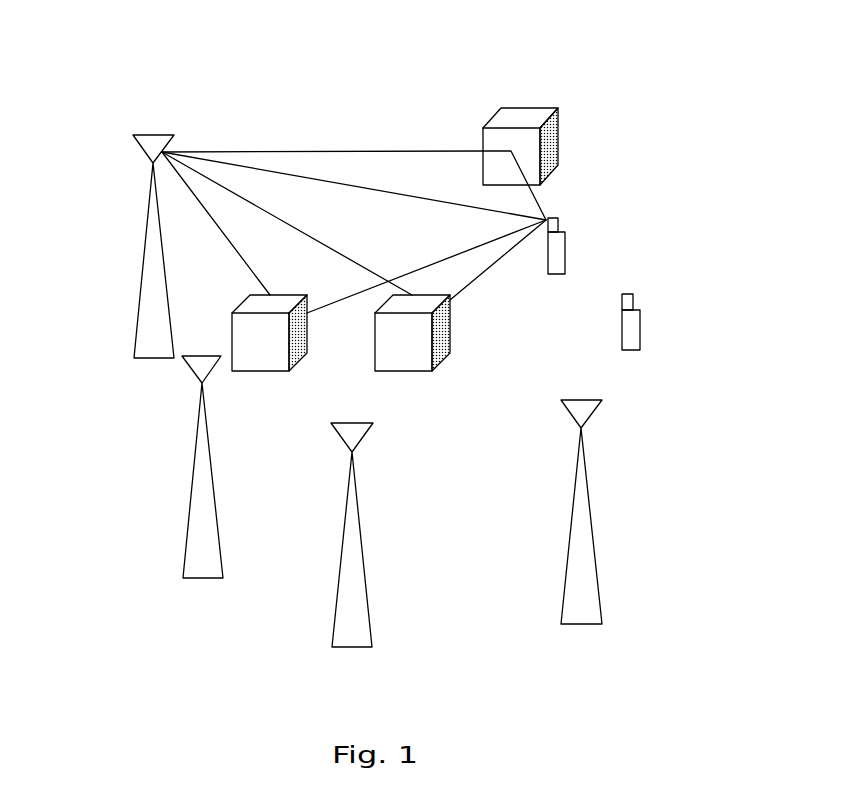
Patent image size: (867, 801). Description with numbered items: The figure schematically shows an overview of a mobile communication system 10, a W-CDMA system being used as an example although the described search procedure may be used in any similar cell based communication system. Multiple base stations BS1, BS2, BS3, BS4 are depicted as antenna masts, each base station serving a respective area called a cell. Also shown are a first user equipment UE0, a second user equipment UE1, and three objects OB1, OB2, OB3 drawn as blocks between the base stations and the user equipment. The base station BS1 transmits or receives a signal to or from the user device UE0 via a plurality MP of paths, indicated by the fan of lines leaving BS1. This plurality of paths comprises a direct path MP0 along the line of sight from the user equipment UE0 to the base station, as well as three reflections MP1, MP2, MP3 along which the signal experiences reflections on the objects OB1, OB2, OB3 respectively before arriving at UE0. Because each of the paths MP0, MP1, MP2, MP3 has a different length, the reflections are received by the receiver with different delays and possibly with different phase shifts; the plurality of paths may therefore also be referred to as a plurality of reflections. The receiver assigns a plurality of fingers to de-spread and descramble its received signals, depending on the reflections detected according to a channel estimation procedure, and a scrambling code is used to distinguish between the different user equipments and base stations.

The wireless communication system 10 is at (718, 90).
The base station BS1 is at (153, 262).
The base station BS2 is at (203, 482).
The base station BS3 is at (352, 550).
The base station BS4 is at (582, 525).
The object OB1 is at (526, 120).
The object OB2 is at (442, 352).
The object OB3 is at (262, 357).
The first user equipment UE0 is at (560, 260).
The second user equipment UE1 is at (635, 337).
The plurality of paths MP is at (340, 88).
The direct path MP0 is at (372, 193).
The reflection MP1 is at (262, 152).
The reflection MP2 is at (352, 257).
The reflection MP3 is at (225, 240).